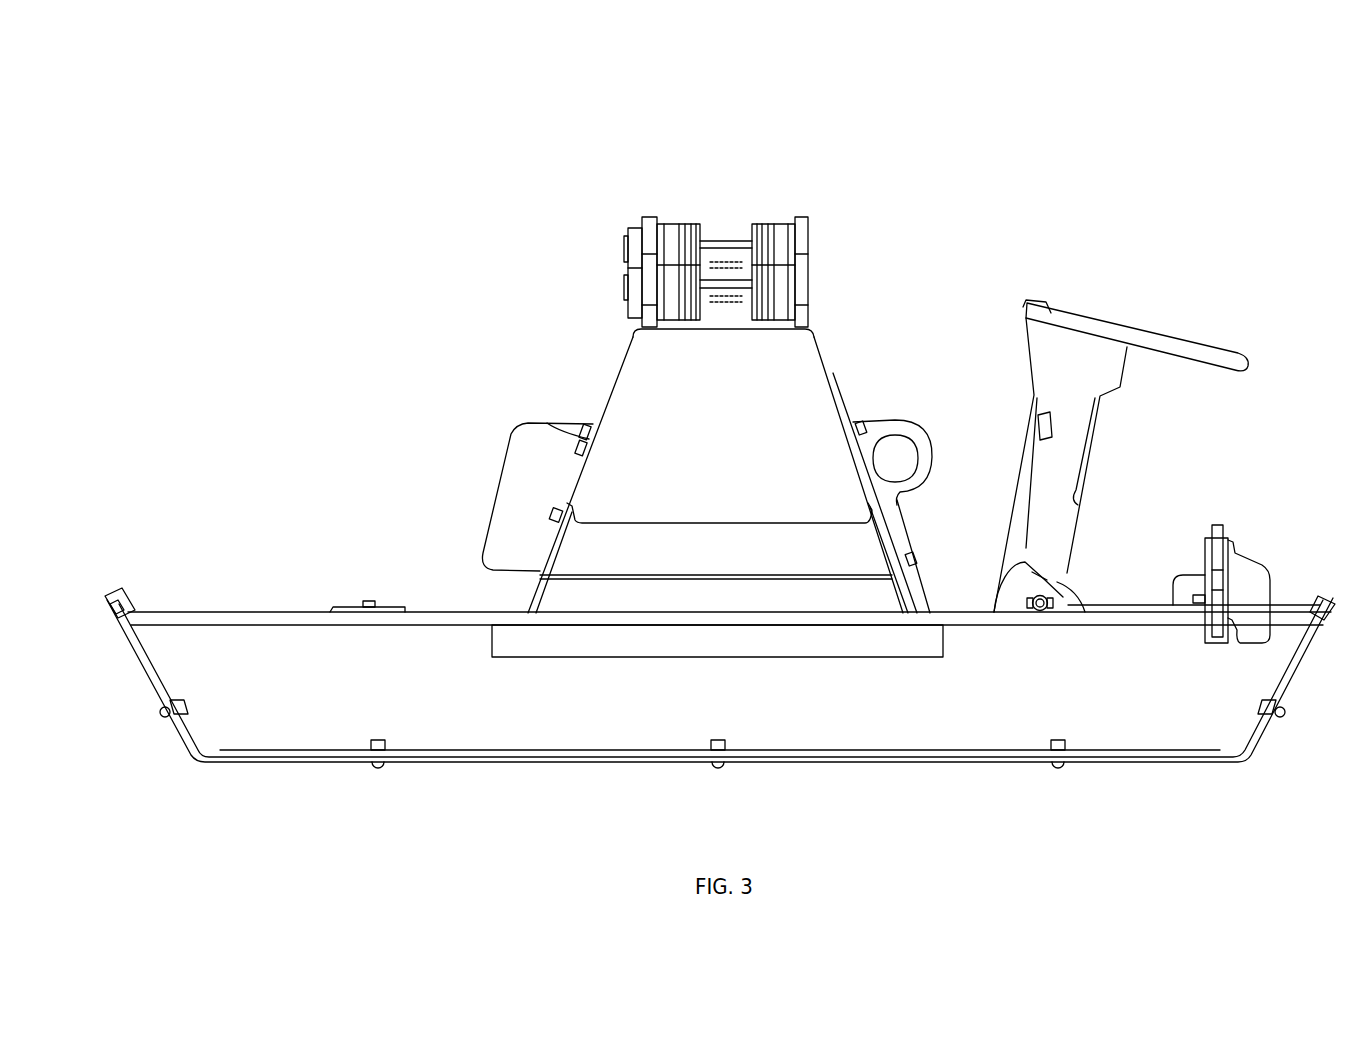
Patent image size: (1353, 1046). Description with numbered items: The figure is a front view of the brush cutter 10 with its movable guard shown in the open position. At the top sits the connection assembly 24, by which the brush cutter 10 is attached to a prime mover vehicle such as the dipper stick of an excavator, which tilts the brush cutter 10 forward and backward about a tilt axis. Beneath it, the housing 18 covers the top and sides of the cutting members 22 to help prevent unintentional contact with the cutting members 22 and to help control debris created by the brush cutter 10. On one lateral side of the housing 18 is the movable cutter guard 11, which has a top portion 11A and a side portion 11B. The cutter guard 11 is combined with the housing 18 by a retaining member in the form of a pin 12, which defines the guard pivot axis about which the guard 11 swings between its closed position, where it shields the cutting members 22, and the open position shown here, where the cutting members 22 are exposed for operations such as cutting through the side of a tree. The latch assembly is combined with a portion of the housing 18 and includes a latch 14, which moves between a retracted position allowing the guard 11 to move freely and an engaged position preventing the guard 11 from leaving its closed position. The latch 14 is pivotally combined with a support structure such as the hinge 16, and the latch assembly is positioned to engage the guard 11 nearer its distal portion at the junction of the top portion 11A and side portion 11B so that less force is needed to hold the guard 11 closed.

The brush cutter 10 is at (736, 138).
The connection assembly 24 is at (668, 210).
The cutter guard 11 is at (1134, 487).
The top portion 11A is at (1017, 490).
The side portion 11B is at (1207, 345).
The cutting member 22 is at (1040, 422).
The pin 12 is at (1040, 612).
The latch 14 is at (1218, 560).
The hinge 16 is at (1207, 578).
The housing 18 is at (290, 653).